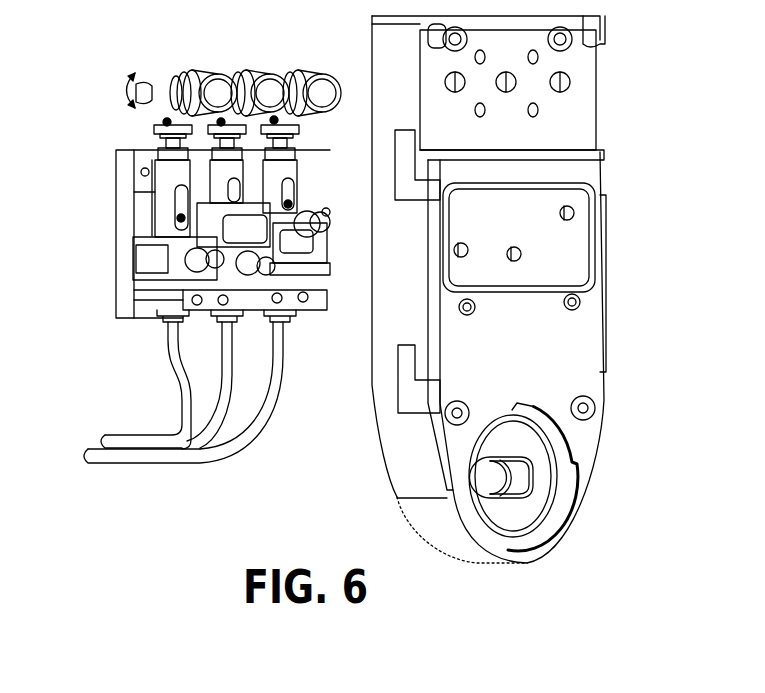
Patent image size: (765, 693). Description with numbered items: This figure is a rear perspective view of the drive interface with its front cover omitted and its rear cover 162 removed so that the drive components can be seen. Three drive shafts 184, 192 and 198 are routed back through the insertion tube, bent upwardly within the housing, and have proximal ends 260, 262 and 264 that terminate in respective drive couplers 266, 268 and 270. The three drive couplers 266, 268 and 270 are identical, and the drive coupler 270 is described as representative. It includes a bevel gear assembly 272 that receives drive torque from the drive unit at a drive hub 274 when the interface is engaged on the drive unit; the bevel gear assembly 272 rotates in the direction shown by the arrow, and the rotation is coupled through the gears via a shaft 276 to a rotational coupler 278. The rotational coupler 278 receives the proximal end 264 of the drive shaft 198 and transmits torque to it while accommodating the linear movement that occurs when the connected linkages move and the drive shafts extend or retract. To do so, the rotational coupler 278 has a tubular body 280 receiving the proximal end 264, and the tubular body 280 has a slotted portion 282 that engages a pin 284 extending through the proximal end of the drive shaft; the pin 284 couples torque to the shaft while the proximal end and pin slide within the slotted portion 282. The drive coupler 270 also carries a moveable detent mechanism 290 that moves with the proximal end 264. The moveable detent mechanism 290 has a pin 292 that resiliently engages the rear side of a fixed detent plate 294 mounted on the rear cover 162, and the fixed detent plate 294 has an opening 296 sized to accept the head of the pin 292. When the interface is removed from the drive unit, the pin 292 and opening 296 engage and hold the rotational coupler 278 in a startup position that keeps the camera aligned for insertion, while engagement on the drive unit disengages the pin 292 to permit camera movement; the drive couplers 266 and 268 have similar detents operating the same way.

The rear cover 162 is at (580, 345).
The drive shaft 184 is at (106, 439).
The drive shaft 192 is at (134, 440).
The drive shaft 198 is at (95, 456).
The proximal end 260 is at (296, 212).
The proximal end 262 is at (283, 222).
The proximal end 264 is at (178, 208).
The drive coupler 266 is at (300, 153).
The drive coupler 268 is at (247, 157).
The drive coupler 270 is at (252, 178).
The bevel gear assembly 272 is at (143, 118).
The drive hub 274 is at (217, 93).
The shaft 276 is at (168, 142).
The rotational coupler 278 is at (126, 168).
The tubular body 280 is at (168, 192).
The slotted portion 282 is at (180, 198).
The pin 284 is at (152, 262).
The moveable detent mechanism 290 is at (152, 280).
The pin 292 is at (215, 270).
The fixed detent plate 294 is at (570, 262).
The opening 296 is at (468, 245).